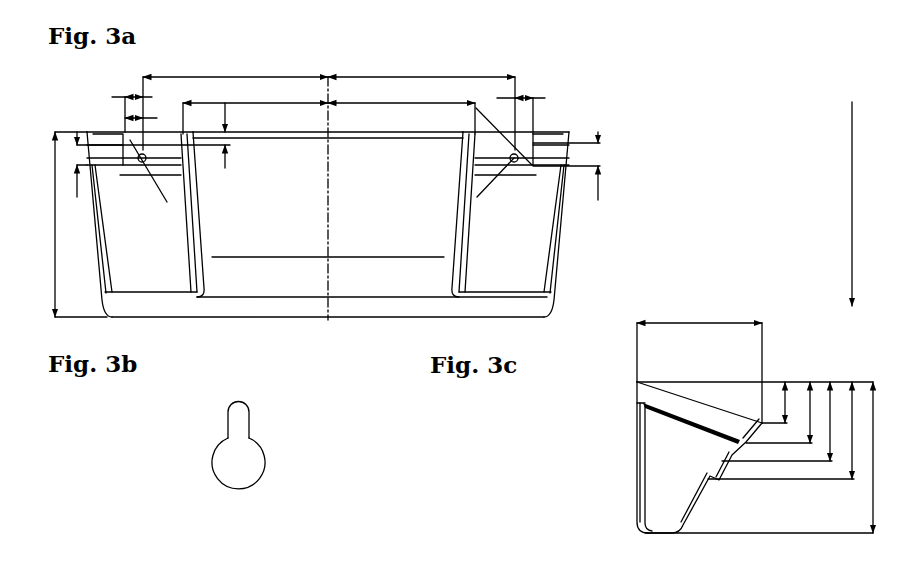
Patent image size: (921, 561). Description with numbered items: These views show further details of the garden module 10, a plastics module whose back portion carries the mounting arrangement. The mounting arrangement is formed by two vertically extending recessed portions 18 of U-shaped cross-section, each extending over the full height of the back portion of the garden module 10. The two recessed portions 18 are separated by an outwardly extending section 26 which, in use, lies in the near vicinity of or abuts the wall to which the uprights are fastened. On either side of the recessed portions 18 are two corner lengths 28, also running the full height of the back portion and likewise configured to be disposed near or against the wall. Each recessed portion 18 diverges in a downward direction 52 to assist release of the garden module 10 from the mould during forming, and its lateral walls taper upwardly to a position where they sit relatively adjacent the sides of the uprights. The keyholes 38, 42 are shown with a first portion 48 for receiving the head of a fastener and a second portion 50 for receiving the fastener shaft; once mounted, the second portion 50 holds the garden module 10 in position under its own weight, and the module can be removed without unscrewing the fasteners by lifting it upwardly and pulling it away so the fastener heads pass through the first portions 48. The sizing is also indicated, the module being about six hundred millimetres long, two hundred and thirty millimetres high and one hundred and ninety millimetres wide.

In FIG. 3a, the garden module 10 is at (656, 111).
In FIG. 3c, the garden module 10 is at (597, 421).
In FIG. 3a, the vertically extending recessed portion 18 is at (161, 262).
In FIG. 3a, the outwardly extending section 26 is at (392, 157).
In FIG. 3a, the corner length 28 is at (110, 198).
In FIG. 3b, the keyhole 38 is at (216, 427).
In FIG. 3b, the keyhole 42 is at (206, 455).
In FIG. 3b, the first portion 48 is at (269, 463).
In FIG. 3b, the second portion 50 is at (255, 401).
In FIG. 3a, the downward direction 52 is at (852, 160).